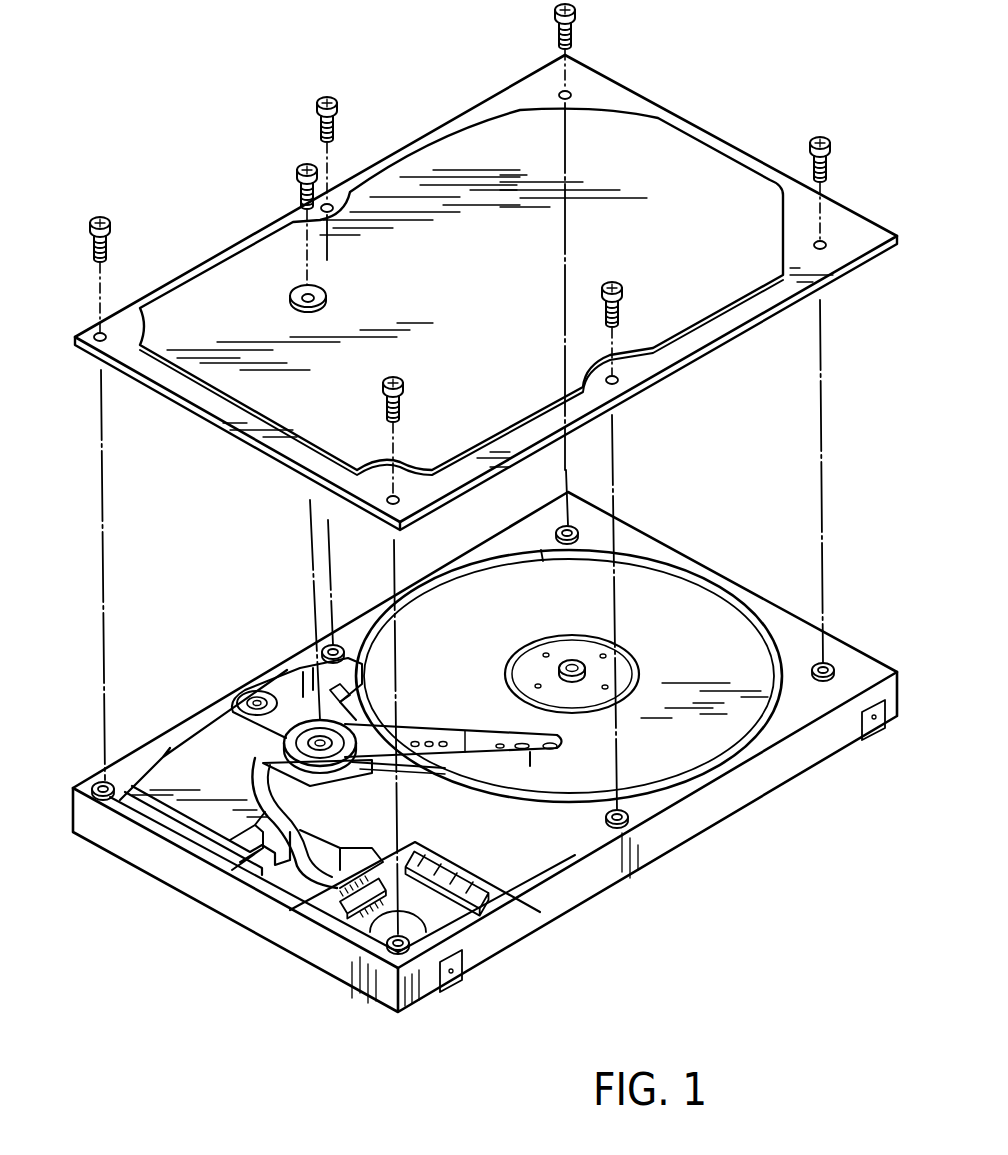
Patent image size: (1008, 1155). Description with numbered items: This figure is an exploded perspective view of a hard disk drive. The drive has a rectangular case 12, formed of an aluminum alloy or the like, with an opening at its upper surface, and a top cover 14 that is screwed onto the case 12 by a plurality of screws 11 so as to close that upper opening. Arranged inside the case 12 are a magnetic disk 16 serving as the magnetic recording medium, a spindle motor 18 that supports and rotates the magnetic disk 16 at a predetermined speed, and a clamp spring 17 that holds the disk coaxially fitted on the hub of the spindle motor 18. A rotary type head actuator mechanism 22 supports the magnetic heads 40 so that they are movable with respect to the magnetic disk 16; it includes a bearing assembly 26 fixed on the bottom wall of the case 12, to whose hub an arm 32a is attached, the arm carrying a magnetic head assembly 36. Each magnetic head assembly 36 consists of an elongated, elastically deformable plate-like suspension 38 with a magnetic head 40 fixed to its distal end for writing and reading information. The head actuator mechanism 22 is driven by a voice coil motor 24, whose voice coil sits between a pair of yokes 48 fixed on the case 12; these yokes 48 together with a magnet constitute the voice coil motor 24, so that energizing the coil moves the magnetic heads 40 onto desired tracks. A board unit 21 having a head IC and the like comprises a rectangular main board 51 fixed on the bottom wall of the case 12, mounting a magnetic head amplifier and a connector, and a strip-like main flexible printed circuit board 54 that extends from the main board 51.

The screws 11 is at (577, 12).
The case 12 is at (780, 773).
The top cover 14 is at (680, 148).
The magnetic disk 16 is at (668, 592).
The clamp spring 17 is at (520, 657).
The spindle motor 18 is at (569, 656).
The board unit 21 is at (357, 928).
The head actuator mechanism 22 is at (383, 706).
The voice coil motor 24 is at (178, 868).
The bearing assembly 26 is at (290, 748).
The arm 32a is at (425, 738).
The magnetic head assembly 36 is at (489, 734).
The suspension 38 is at (480, 762).
The magnetic head 40 is at (557, 750).
The yokes 48 is at (190, 745).
The main board 51 is at (450, 910).
The main flexible printed circuit board 54 is at (305, 800).